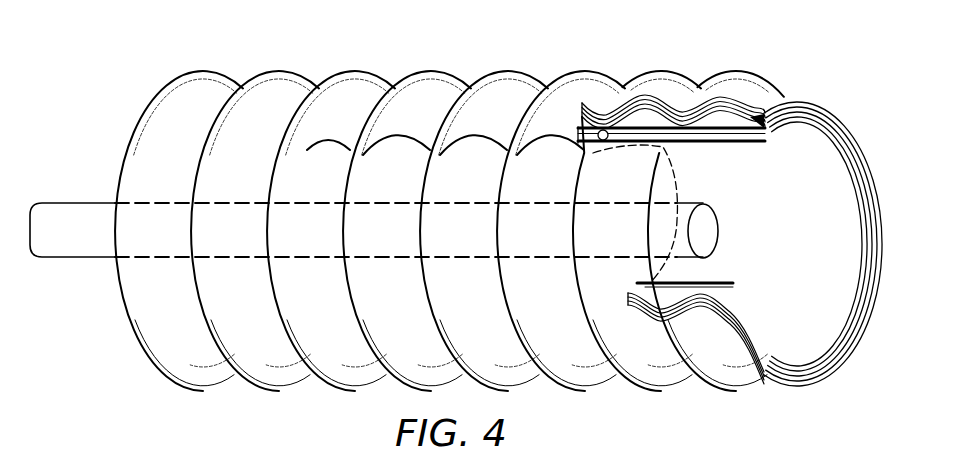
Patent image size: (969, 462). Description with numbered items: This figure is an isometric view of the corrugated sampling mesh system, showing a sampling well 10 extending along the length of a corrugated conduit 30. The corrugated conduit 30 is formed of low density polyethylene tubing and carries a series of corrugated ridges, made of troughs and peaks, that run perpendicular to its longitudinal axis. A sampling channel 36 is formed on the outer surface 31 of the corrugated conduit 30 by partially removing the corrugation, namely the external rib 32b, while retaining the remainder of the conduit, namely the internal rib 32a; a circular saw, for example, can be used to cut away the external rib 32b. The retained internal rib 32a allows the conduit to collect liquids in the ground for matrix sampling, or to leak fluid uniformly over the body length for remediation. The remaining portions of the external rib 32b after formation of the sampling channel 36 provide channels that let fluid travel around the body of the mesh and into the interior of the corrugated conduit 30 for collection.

The sampling well 10 is at (85, 258).
The corrugated conduit 30 is at (427, 207).
The outer surface 31 is at (150, 317).
The internal rib 32a is at (508, 68).
The external rib 32b is at (592, 97).
The sampling channel 36 is at (610, 120).